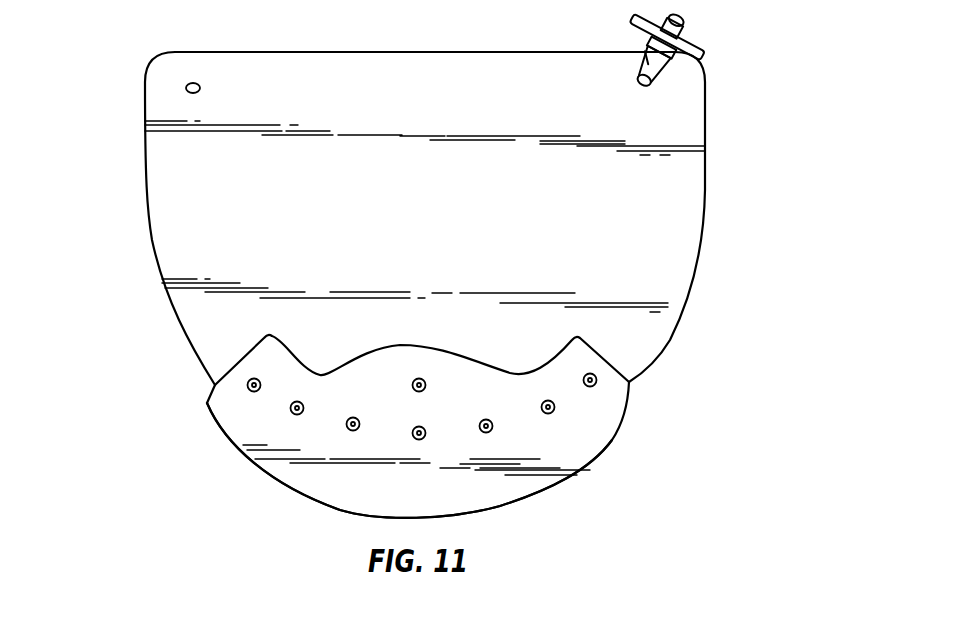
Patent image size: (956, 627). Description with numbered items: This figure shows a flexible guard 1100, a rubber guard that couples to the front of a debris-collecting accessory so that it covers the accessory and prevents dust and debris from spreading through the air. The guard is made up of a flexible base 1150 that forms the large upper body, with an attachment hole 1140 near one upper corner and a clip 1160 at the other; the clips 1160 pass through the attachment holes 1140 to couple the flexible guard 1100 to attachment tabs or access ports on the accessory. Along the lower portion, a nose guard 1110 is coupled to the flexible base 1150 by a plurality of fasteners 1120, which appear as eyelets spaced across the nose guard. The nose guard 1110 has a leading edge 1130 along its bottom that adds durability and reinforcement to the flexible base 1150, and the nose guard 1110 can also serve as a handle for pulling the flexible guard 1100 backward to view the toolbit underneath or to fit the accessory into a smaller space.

The flexible guard 1100 is at (128, 272).
The nose guard 1110 is at (575, 442).
The fasteners 1120 is at (488, 432).
The leading edge 1130 is at (487, 512).
The attachment holes 1140 is at (189, 82).
The flexible base 1150 is at (613, 247).
The clips 1160 is at (686, 40).